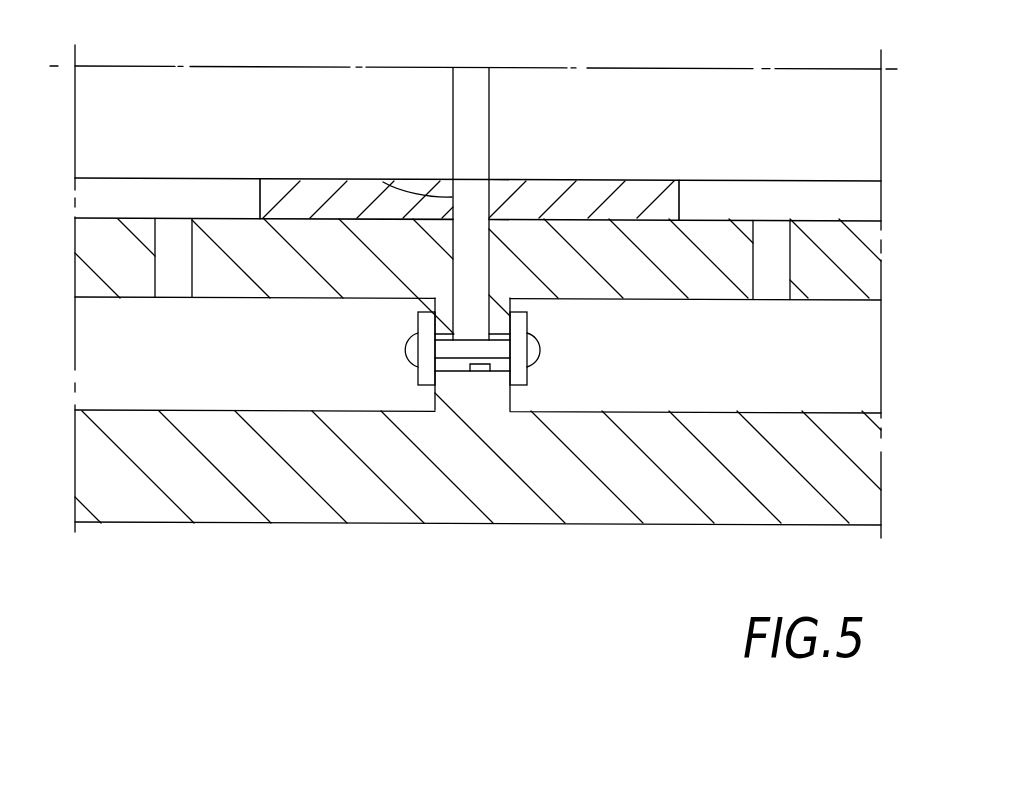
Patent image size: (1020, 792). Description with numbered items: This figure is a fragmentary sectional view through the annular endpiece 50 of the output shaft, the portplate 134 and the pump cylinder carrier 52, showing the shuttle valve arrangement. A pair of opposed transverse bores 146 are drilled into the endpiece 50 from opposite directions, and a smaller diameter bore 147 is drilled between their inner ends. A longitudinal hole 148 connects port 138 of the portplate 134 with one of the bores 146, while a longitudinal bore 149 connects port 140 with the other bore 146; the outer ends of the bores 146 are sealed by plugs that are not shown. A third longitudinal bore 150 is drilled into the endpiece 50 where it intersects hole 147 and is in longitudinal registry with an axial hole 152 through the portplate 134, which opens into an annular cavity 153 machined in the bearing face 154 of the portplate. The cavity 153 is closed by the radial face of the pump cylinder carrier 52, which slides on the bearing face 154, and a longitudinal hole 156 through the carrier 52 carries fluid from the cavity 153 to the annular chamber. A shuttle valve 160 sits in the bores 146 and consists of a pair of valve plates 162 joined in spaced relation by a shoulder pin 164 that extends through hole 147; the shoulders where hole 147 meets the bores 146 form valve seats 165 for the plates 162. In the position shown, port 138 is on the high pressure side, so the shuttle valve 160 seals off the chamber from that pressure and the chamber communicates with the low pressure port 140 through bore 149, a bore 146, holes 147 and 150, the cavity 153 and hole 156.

The annular endpiece 50 is at (511, 513).
The pump cylinder carrier 52 is at (660, 92).
The portplate 134 is at (638, 182).
The port 138 is at (192, 193).
The port 140 is at (777, 196).
The transverse bores 146 is at (203, 409).
The smaller diameter bore 147 is at (490, 372).
The longitudinal hole 148 is at (192, 266).
The longitudinal bore 149 is at (753, 268).
The third longitudinal bore 150 is at (453, 262).
The axial hole 152 is at (489, 196).
The annular cavity 153 is at (412, 185).
The bearing face 154 is at (307, 178).
The longitudinal hole 156 is at (489, 110).
The shuttle valve 160 is at (578, 372).
The valve plates 162 is at (416, 366).
The shoulder pin 164 is at (460, 352).
The valve seats 165 is at (527, 323).